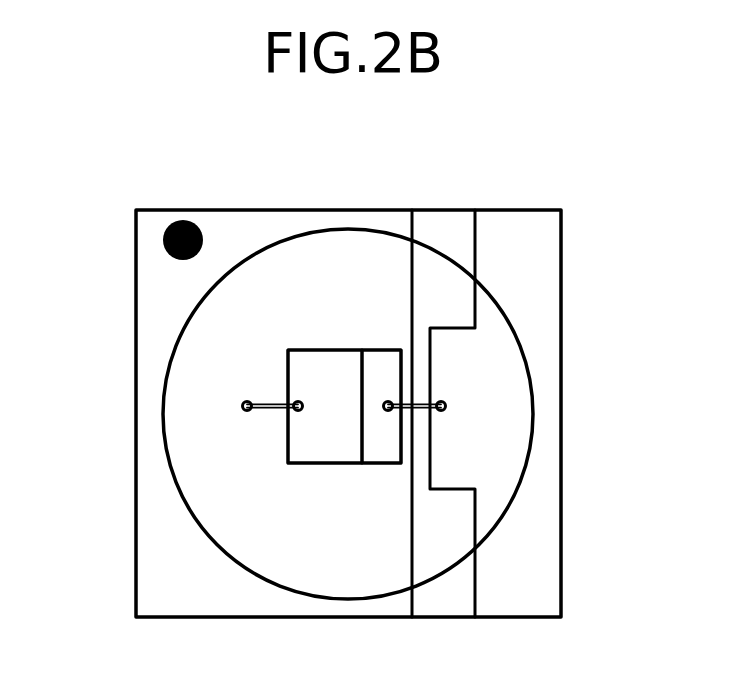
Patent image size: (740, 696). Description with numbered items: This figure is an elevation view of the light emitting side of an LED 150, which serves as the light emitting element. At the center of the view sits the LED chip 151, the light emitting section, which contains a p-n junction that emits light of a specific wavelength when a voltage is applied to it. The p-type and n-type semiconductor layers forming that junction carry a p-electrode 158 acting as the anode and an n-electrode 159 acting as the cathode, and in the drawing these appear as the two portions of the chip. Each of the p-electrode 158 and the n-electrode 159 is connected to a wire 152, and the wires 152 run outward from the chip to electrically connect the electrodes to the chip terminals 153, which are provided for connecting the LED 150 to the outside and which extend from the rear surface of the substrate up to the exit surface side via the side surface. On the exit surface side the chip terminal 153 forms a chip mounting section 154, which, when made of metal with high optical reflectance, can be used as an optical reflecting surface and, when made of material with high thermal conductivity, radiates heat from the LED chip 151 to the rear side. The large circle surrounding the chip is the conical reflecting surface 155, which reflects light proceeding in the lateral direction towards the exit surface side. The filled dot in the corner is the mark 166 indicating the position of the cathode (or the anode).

The LED 150 is at (352, 565).
The LED chip 151 is at (334, 350).
The wire 152 is at (242, 405).
The chip terminal 153 is at (180, 583).
The chip mounting section 154 is at (239, 298).
The conical reflecting surface 155 is at (193, 307).
The p-electrode 158 is at (378, 367).
The n-electrode 159 is at (305, 372).
The mark 166 is at (163, 234).